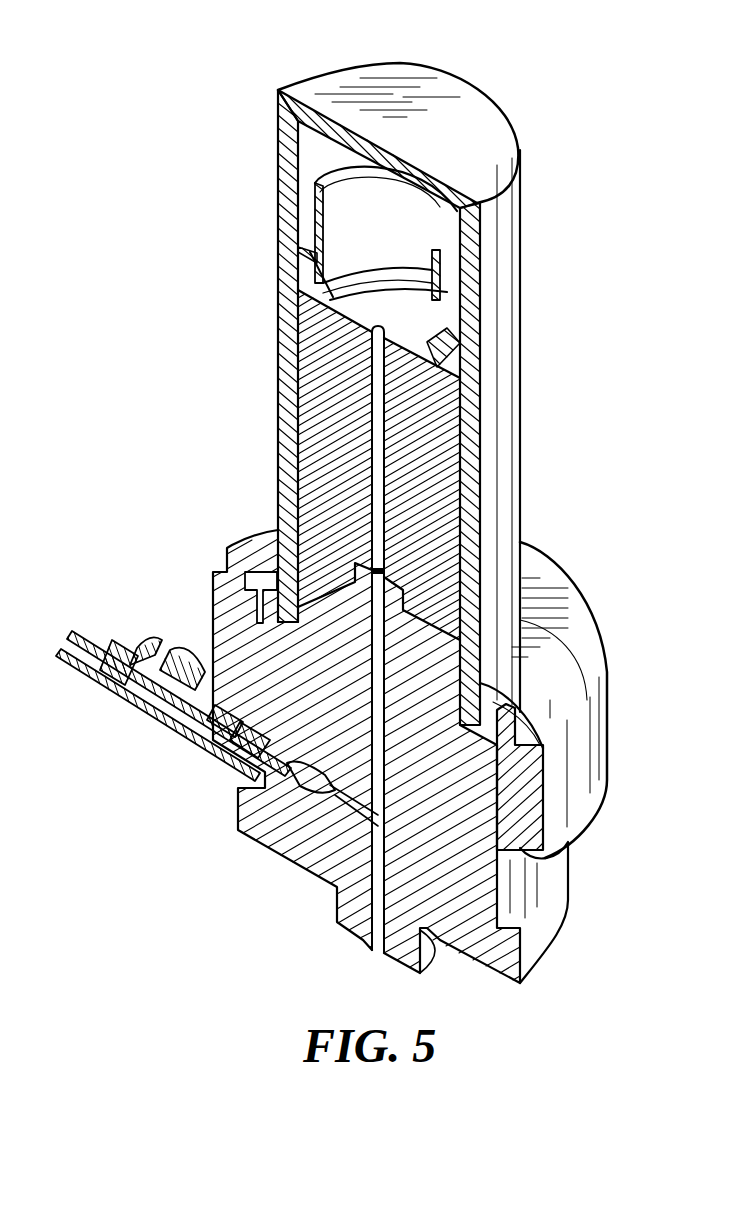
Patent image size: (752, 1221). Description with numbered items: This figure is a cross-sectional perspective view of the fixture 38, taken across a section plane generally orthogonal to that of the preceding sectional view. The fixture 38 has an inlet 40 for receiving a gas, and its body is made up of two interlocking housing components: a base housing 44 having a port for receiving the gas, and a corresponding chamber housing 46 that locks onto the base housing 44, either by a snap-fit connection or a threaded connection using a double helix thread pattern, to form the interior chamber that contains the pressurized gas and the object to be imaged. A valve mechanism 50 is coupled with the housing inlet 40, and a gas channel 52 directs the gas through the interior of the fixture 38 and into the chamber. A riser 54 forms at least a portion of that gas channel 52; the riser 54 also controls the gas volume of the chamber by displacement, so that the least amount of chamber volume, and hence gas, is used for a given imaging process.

The fixture 38 is at (128, 58).
The inlet 40 is at (295, 772).
The base housing 44 is at (597, 720).
The chamber housing 46 is at (507, 212).
The valve mechanism 50 is at (98, 620).
The gas channel 52 is at (376, 377).
The riser member 54 is at (315, 415).